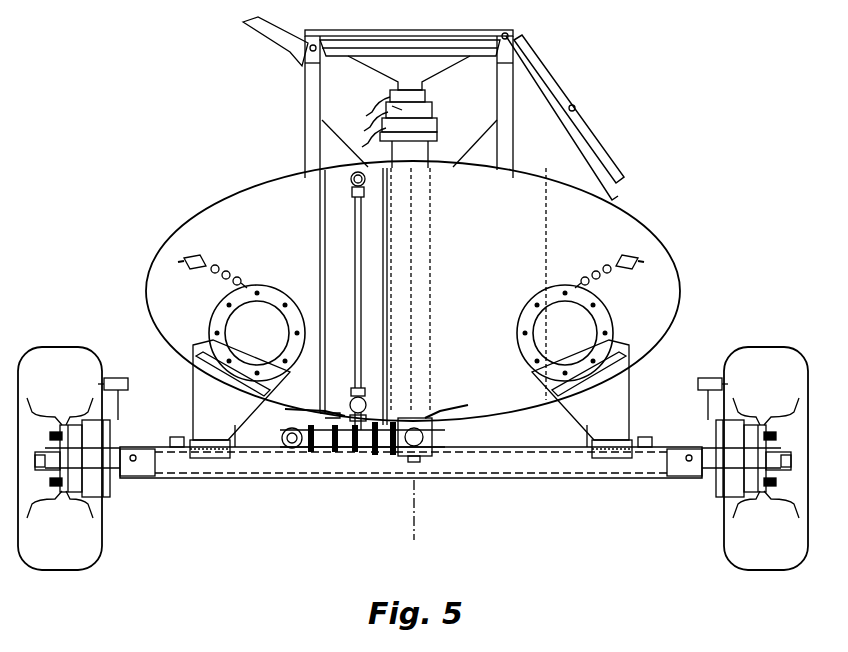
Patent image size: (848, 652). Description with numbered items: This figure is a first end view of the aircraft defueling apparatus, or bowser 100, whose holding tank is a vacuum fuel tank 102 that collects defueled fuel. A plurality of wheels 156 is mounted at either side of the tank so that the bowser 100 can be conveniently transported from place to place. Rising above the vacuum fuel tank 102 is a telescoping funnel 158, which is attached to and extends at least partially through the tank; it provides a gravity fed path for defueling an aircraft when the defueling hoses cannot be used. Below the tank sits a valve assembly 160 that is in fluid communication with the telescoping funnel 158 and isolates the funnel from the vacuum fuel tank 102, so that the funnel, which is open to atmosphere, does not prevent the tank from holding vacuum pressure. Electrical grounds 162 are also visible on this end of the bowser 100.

The aircraft defueling apparatus or bowser 100 is at (660, 106).
The vacuum fuel tank 102 is at (224, 200).
The wheels 156 is at (67, 555).
The telescoping funnel 158 is at (384, 108).
The valve assembly 160 is at (375, 470).
The electrical grounds 162 is at (195, 257).